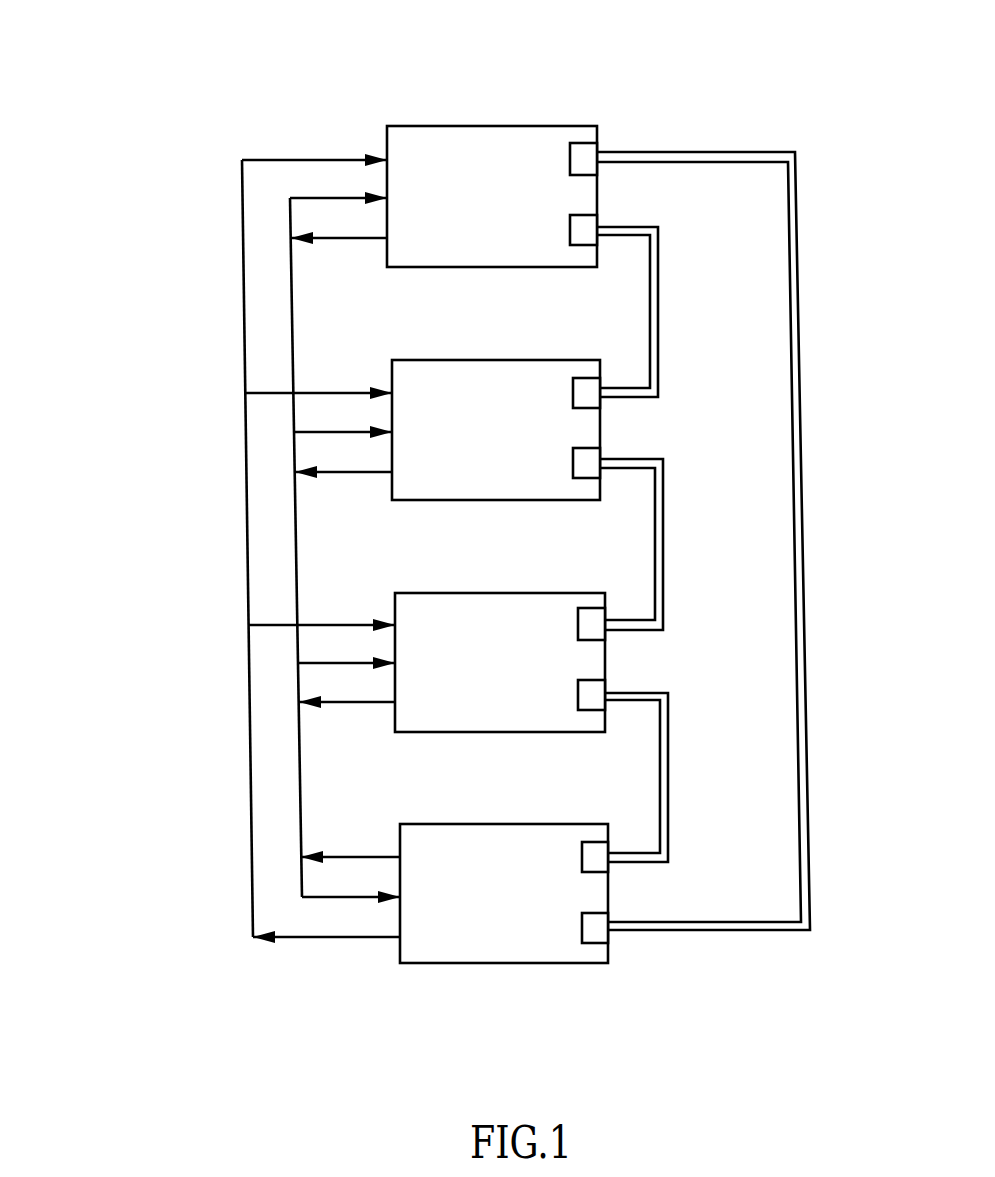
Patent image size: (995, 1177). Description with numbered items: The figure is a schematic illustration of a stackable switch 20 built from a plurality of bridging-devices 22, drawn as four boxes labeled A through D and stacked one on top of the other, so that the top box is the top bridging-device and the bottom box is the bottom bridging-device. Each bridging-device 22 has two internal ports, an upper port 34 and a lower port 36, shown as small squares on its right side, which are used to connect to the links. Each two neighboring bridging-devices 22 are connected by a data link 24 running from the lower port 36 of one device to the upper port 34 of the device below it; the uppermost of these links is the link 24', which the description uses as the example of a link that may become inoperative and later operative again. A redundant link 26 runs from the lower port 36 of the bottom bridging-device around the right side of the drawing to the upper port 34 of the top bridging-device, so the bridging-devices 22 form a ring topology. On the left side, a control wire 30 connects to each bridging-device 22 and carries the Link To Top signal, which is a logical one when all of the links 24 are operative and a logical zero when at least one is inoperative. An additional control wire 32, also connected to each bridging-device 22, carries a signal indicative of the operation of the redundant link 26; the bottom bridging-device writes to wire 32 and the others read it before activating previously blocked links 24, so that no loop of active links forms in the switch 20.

The stackable switch 20 is at (90, 126).
The bridging-device 22 is at (483, 268).
The data link 24 is at (671, 660).
The inoperative link 24' is at (668, 312).
The redundant link 26 is at (802, 548).
The control wire 30 is at (297, 546).
The additional control wire 32 is at (243, 275).
The upper port 34 is at (570, 158).
The lower port 36 is at (570, 232).